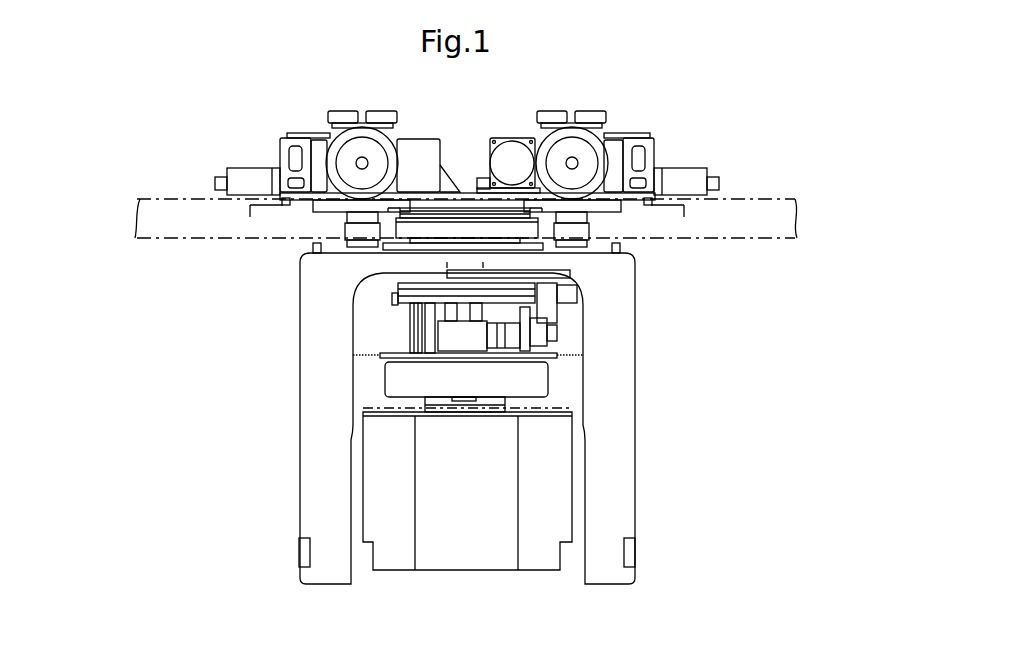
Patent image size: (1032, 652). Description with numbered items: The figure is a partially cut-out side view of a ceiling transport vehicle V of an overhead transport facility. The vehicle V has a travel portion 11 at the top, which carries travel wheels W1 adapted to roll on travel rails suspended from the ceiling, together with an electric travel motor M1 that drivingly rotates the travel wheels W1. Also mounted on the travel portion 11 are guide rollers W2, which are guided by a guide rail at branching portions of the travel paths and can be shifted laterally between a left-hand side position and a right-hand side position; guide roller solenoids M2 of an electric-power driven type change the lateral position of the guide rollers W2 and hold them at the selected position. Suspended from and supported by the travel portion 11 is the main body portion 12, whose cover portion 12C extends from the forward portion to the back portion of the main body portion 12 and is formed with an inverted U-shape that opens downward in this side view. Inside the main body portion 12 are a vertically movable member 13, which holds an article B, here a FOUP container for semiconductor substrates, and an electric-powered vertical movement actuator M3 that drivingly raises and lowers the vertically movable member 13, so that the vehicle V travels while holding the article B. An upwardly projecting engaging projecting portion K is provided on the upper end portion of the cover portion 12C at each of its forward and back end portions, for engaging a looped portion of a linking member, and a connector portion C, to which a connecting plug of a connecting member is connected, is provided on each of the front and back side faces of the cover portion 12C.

The travel portion 11 is at (234, 156).
The main body portion 12 is at (640, 323).
The cover portion 12C is at (634, 408).
The vertically movable member 13 is at (393, 380).
The article B is at (460, 558).
The connector portion C is at (300, 552).
The engaging projecting portion K is at (312, 247).
The travel motor M1 is at (518, 152).
The guide roller solenoid M2 is at (282, 152).
The vertical movement actuator M3 is at (396, 325).
The ceiling transport vehicle V is at (273, 302).
The travel wheel W1 is at (343, 157).
The guide roller W2 is at (343, 111).